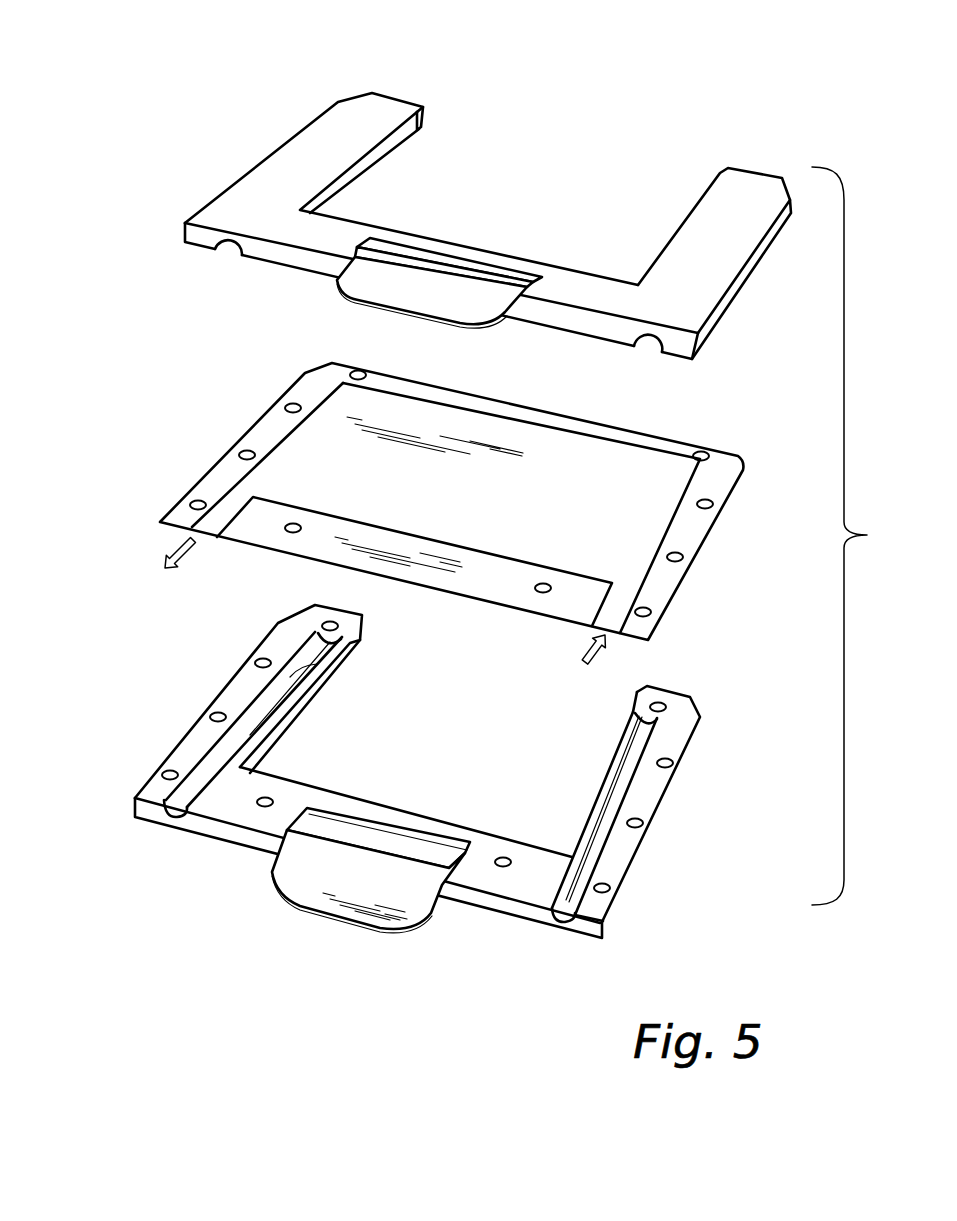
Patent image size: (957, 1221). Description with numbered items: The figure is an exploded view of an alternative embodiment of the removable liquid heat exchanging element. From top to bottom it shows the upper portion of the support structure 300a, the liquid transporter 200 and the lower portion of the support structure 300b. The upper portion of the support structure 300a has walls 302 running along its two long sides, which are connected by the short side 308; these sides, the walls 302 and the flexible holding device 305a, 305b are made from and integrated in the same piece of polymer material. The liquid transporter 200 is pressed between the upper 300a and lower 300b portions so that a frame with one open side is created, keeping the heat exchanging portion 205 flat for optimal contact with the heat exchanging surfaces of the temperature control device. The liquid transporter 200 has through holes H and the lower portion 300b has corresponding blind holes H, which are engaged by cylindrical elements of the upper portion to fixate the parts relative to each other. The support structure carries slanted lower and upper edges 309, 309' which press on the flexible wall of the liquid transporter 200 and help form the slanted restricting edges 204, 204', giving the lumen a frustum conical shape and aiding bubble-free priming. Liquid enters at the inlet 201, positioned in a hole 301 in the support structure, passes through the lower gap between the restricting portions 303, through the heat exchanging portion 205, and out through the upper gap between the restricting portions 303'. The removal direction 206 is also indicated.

The liquid transporter 200 is at (195, 425).
The inlet 201 is at (572, 674).
The slanted restricting edge 204 is at (451, 482).
The slanted restricting edge 204' is at (402, 475).
The heat exchanging portion 205 is at (490, 518).
The removal direction 206 is at (158, 569).
The upper portion of the support structure 300a is at (506, 181).
The lower portion of the support structure 300b is at (458, 771).
The hole 301 is at (228, 250).
The walls 302 is at (303, 128).
The restricting portion 303 is at (586, 813).
The restricting portion 303' is at (296, 719).
The flexible holding device 305a is at (465, 302).
The flexible holding device 305b is at (390, 887).
The short side 308 is at (333, 233).
The slanted lower edge 309 is at (565, 771).
The slanted upper edge 309' is at (394, 644).
The holes H is at (707, 500).